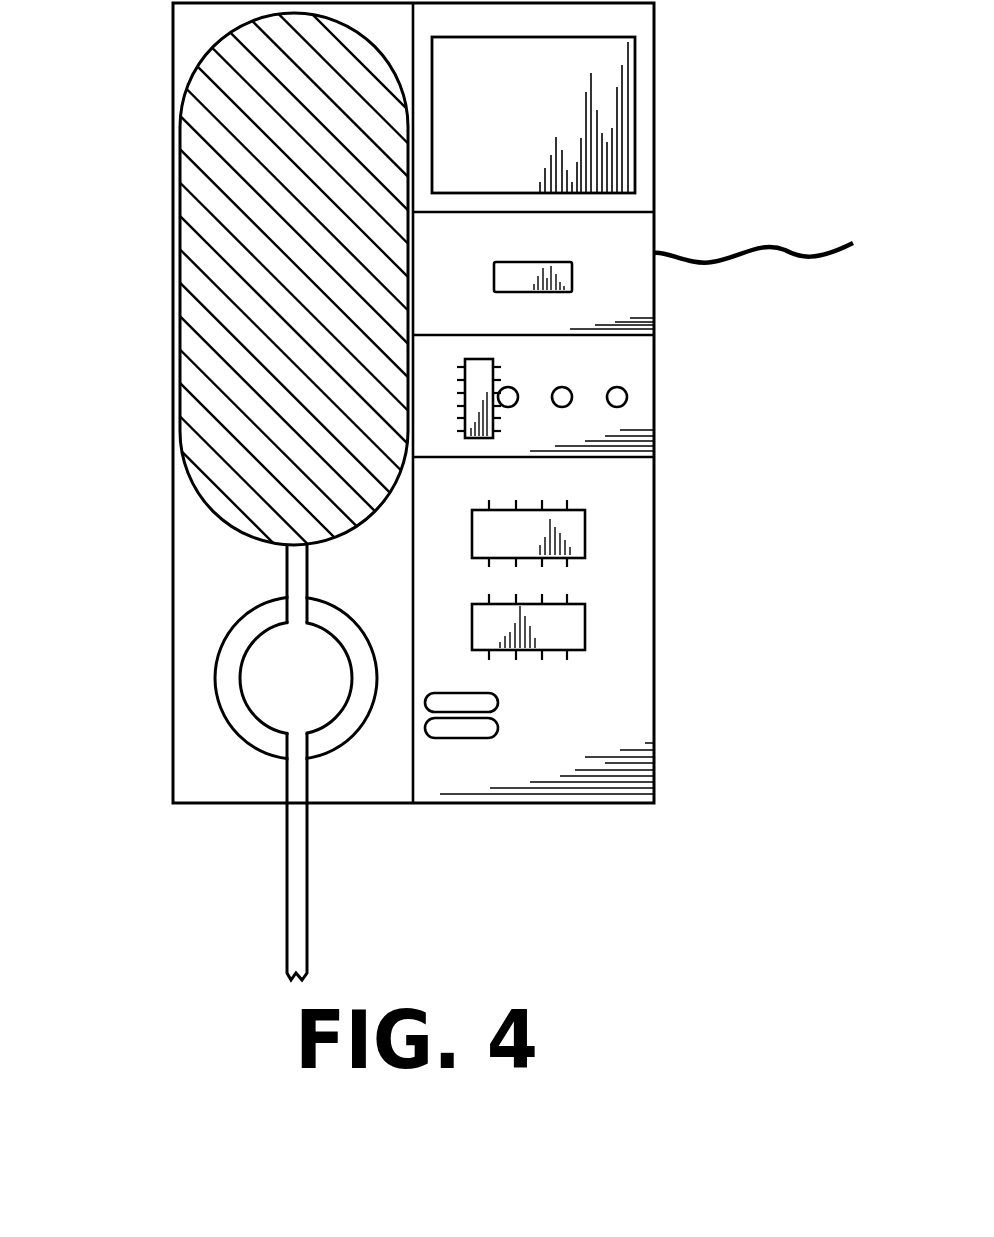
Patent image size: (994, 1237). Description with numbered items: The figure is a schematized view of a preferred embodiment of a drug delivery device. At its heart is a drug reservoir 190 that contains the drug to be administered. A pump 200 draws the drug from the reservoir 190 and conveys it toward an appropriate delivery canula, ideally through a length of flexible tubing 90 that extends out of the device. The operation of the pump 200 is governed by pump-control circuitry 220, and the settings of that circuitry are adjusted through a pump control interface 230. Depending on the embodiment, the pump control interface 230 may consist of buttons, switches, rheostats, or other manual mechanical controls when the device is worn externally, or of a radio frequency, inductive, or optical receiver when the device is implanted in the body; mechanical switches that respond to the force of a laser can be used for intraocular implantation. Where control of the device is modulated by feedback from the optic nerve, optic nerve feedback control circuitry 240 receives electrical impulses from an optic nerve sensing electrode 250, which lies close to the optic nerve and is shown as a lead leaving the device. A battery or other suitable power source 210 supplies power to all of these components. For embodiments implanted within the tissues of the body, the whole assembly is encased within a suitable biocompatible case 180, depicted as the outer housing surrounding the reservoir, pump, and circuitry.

The flexible tubing 90 is at (307, 870).
The biocompatible case 180 is at (654, 792).
The drug reservoir 190 is at (253, 270).
The pump 200 is at (295, 677).
The battery or other suitable power source 210 is at (606, 124).
The pump-control circuitry 220 is at (603, 715).
The pump control interface 230 is at (640, 400).
The optic nerve feedback control circuitry 240 is at (617, 300).
The optic nerve sensing electrode 250 is at (812, 257).